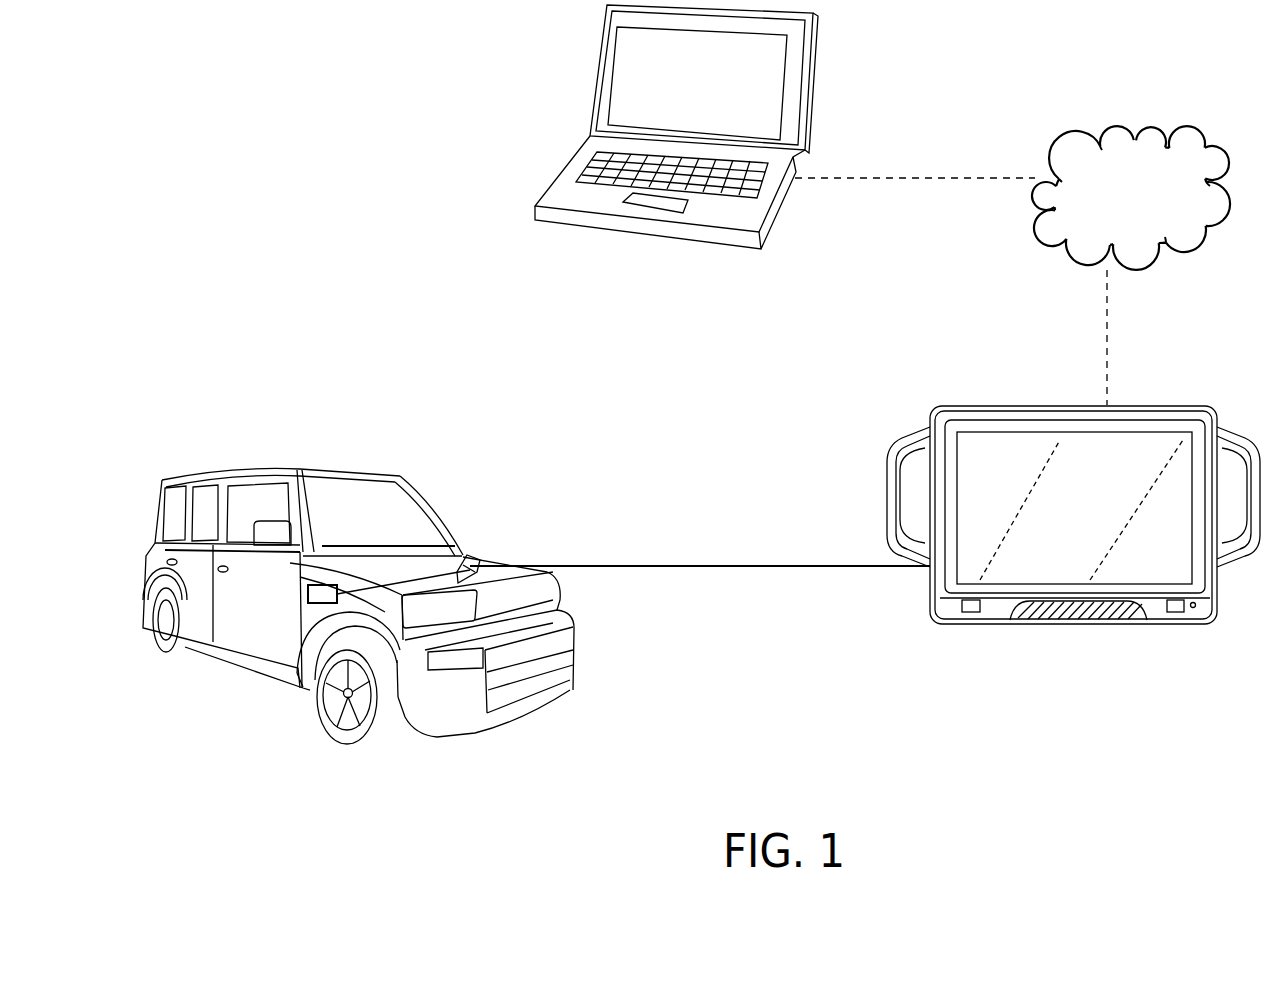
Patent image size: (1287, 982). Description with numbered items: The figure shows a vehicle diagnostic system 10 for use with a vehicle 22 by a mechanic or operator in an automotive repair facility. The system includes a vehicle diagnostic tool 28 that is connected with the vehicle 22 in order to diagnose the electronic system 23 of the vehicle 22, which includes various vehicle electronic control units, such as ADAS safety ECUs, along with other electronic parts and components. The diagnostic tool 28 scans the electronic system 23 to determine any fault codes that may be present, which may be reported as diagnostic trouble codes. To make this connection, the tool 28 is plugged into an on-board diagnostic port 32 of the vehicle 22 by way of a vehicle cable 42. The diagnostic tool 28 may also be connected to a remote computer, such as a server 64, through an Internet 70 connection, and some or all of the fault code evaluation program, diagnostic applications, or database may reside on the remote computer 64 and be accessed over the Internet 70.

The vehicle diagnostic system 10 is at (328, 220).
The vehicle 22 is at (341, 470).
The electronic system 23 is at (303, 601).
The vehicle diagnostic tool 28 is at (1167, 400).
The on-board diagnostic (OBD) diagnostic port 32 is at (467, 555).
The vehicle cable 42 is at (688, 566).
The server 64 is at (812, 83).
The Internet 70 is at (1133, 201).